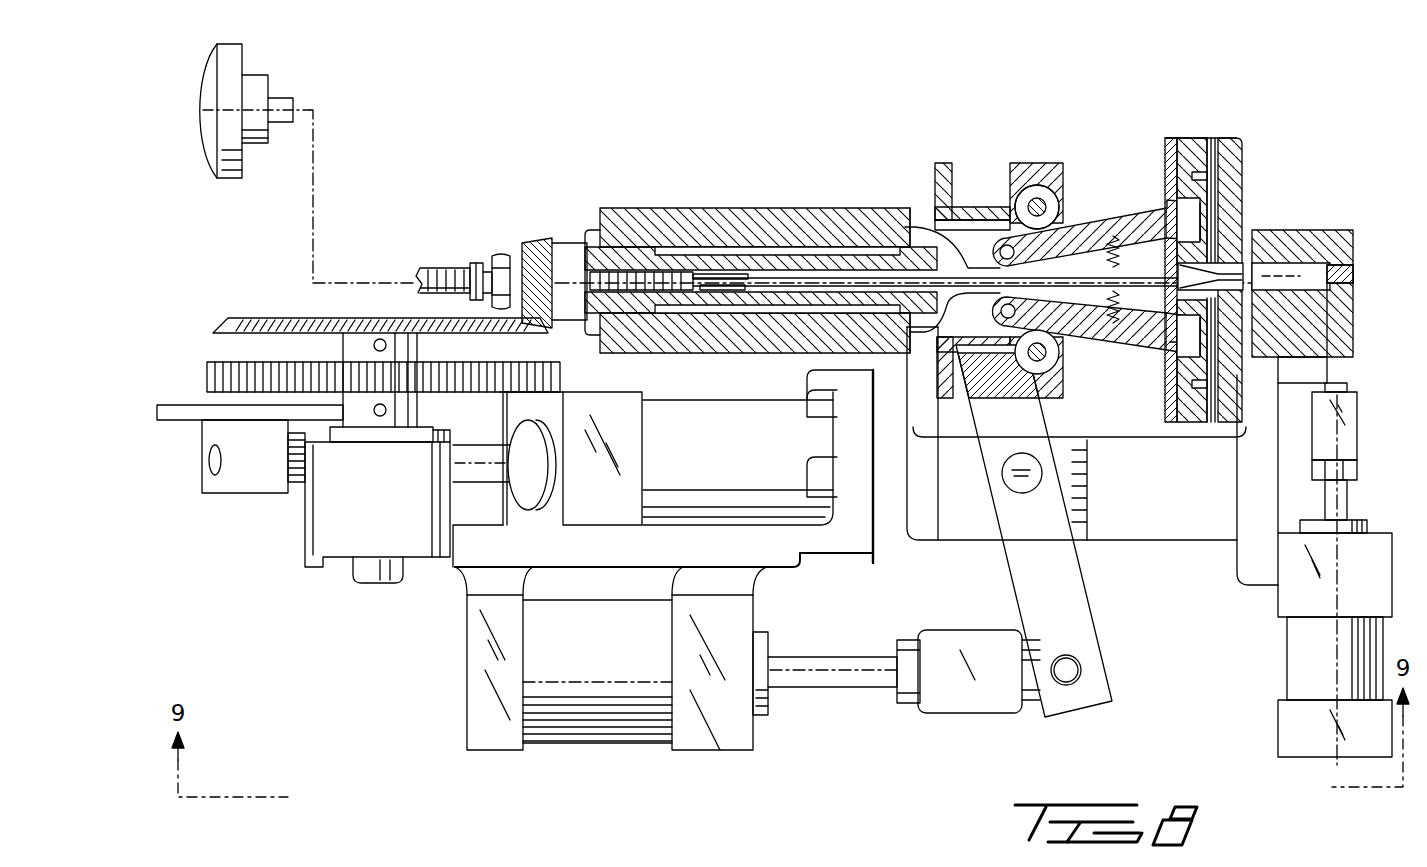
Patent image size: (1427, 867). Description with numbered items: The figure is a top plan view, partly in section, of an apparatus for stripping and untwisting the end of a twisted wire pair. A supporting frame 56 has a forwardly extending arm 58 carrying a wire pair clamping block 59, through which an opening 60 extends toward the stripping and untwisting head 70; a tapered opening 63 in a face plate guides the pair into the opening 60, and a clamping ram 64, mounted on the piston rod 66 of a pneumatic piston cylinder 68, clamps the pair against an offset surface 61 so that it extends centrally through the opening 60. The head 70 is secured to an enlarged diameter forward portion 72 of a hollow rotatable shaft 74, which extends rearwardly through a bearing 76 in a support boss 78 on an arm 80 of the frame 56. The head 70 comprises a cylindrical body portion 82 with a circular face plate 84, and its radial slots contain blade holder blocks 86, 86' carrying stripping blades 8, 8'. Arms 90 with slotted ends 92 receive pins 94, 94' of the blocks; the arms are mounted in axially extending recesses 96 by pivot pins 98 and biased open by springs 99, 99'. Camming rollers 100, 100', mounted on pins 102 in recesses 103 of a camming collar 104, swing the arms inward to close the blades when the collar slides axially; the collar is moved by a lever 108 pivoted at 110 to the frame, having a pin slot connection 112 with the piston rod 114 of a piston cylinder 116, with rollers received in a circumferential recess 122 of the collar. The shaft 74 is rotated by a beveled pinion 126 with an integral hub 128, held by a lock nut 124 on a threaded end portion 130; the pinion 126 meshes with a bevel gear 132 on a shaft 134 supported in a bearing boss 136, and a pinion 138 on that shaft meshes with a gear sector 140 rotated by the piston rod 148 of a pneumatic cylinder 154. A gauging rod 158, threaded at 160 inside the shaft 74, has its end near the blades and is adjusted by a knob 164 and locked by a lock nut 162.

The knob 164 is at (262, 80).
The lock nut 162 is at (468, 270).
The threaded end portion 130 is at (490, 262).
The lock nut 124 is at (501, 255).
The beveled pinion 126 is at (535, 240).
The hub 128 is at (572, 250).
The support boss 78 is at (760, 228).
The bearing 76 is at (795, 252).
The threads 160 is at (690, 268).
The rod 158 is at (850, 278).
The hollow rotatable shaft 74 is at (922, 226).
The axially extending recesses 96 is at (977, 333).
The enlarged diameter forward portion 72 is at (985, 232).
The circumferential recess 122 is at (990, 210).
The camming collar 104 is at (1058, 175).
The camming roller 100' is at (1069, 197).
The recesses 103 is at (1027, 200).
The arm 90 is at (1078, 234).
The pivot pin 98 is at (1000, 252).
The pin 94' is at (1161, 210).
The pin 94 is at (1165, 334).
The slotted end 92 is at (1175, 350).
The spring 99' is at (1110, 223).
The spring 99 is at (1093, 330).
The camming roller 100 is at (1017, 386).
The pin 102 is at (1045, 355).
The lever 108 is at (1080, 605).
The pivot 110 is at (1025, 490).
The pin slot connection 112 is at (1072, 670).
The cylindrical body portion 82 is at (1172, 140).
The blade holder block 86' is at (1198, 175).
The blade holder block 86 is at (1194, 387).
The circular face plate 84 is at (1235, 175).
The stripping and untwisting head 70 is at (1242, 138).
The stripping blade 8' is at (1239, 212).
The stripping blade 8 is at (1242, 330).
The wire pair clamping block 59 is at (1323, 250).
The opening 60 is at (1292, 272).
The offset surface 61 is at (1348, 275).
The tapered opening 63 is at (1348, 307).
The clamping ram 64 is at (1342, 375).
The piston rod 66 is at (1335, 498).
The pneumatic piston cylinder 68 is at (1298, 669).
The forwardly extending arm 58 is at (1190, 520).
The arm 80 is at (890, 432).
The supporting frame 56 is at (873, 567).
The pneumatic cylinder 154 is at (672, 465).
The piston rod 148 is at (490, 470).
The bevel gear 132 is at (240, 320).
The gear sector 140 is at (222, 375).
The pinion 138 is at (380, 378).
The bearing boss 136 is at (320, 535).
The shaft 134 is at (378, 572).
The piston cylinder 116 is at (588, 737).
The piston rod 114 is at (815, 680).